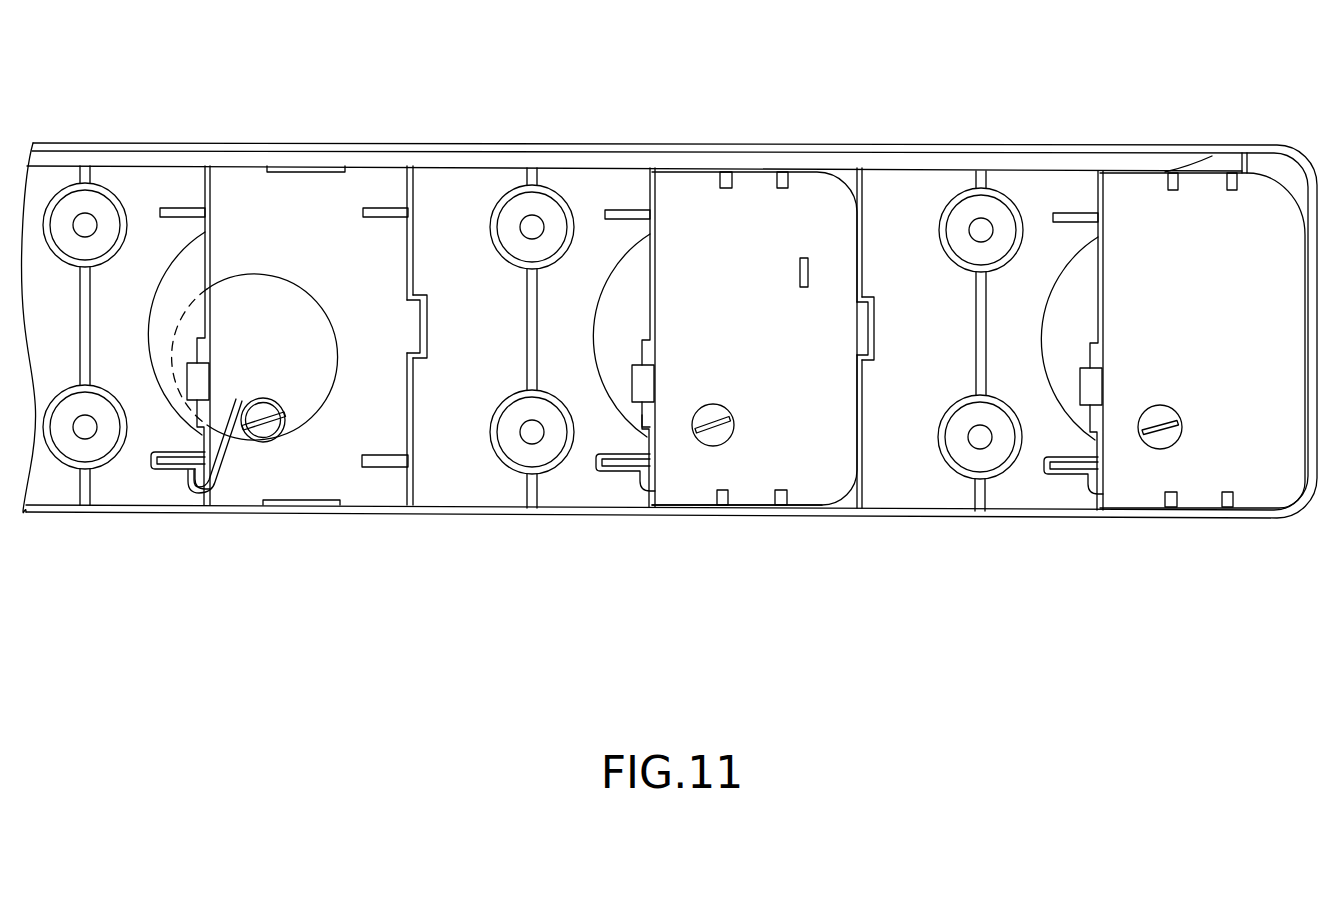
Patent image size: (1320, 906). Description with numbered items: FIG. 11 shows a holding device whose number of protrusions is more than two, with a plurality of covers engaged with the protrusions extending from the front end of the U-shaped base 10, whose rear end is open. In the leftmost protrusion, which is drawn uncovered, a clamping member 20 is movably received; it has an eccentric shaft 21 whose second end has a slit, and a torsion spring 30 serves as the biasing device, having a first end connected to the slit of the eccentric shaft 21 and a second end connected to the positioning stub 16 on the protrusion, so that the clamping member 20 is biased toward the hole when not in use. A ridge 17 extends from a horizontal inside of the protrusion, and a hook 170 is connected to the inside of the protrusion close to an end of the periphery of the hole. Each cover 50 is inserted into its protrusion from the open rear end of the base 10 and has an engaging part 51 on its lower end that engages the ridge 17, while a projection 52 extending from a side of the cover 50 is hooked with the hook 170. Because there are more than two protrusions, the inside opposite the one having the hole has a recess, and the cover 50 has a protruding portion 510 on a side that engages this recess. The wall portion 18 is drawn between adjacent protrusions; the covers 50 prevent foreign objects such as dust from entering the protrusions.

The base 10 is at (589, 147).
The positioning stub 16 is at (166, 462).
The ridge 17 is at (323, 165).
The partition wall 18 is at (410, 420).
The clamping member 20 is at (253, 251).
The eccentric shaft 21 is at (268, 430).
The torsion spring 30 is at (226, 471).
The cover 50 is at (757, 210).
The engaging part 51 is at (752, 500).
The projection 52 is at (647, 415).
The hook 170 is at (193, 387).
The protruding portion 510 is at (874, 330).